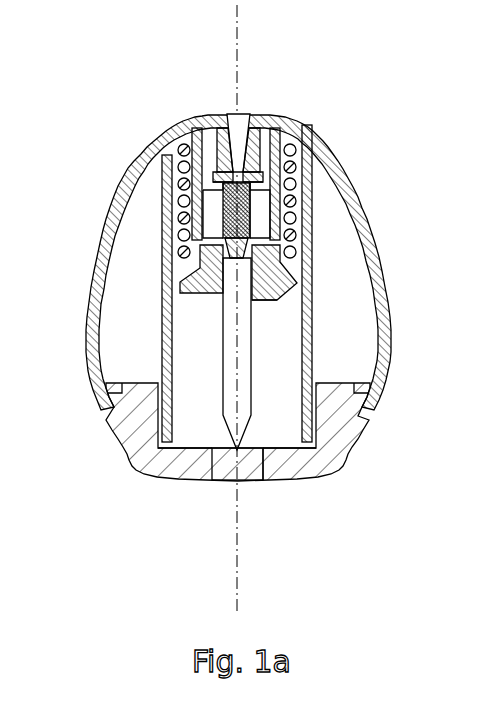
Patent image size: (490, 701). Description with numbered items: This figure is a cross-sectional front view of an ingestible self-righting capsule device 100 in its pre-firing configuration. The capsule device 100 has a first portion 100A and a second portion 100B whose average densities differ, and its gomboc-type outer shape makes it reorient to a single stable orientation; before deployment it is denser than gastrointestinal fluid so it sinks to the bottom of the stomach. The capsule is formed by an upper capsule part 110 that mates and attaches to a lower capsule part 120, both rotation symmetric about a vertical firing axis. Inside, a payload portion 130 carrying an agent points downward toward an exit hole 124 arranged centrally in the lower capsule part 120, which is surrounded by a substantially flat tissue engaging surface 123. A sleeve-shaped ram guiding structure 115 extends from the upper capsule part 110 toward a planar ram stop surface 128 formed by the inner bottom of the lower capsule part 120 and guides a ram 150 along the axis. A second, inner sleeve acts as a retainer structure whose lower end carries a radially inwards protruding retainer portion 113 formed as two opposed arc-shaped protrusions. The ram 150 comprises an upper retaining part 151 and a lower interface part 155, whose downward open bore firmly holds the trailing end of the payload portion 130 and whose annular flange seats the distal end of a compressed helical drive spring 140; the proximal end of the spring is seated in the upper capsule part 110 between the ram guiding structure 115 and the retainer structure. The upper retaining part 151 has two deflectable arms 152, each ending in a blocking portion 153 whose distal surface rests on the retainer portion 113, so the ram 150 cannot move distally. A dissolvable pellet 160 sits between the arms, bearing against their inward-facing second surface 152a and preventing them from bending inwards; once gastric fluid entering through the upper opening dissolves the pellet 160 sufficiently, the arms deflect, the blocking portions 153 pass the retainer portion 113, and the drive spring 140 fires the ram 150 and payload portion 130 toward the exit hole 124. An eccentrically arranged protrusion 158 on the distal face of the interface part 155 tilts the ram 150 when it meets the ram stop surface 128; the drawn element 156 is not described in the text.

The ingestible self-righting capsule device 100 is at (241, 308).
The first portion 100A is at (460, 209).
The second portion 100B is at (462, 450).
The upper capsule part 110 is at (267, 262).
The retainer portion 113 is at (137, 222).
The ram guiding structure 115 is at (166, 283).
The lower capsule part 120 is at (270, 446).
The tissue engaging surface 123 is at (210, 494).
The exit hole 124 is at (217, 502).
The ram stop surface 128 is at (315, 491).
The payload portion 130 is at (152, 387).
The drive spring 140 is at (285, 172).
The ram 150 is at (241, 380).
The upper retaining part 151 is at (196, 130).
The deflectable arm 152 is at (143, 175).
The second surface 152a is at (146, 135).
The blocking portion 153 is at (153, 190).
The lower interface part 155 is at (159, 272).
The seat flange 156 is at (122, 269).
The eccentrically arranged protrusion 158 is at (356, 335).
The dissolvable pellet 160 is at (293, 139).